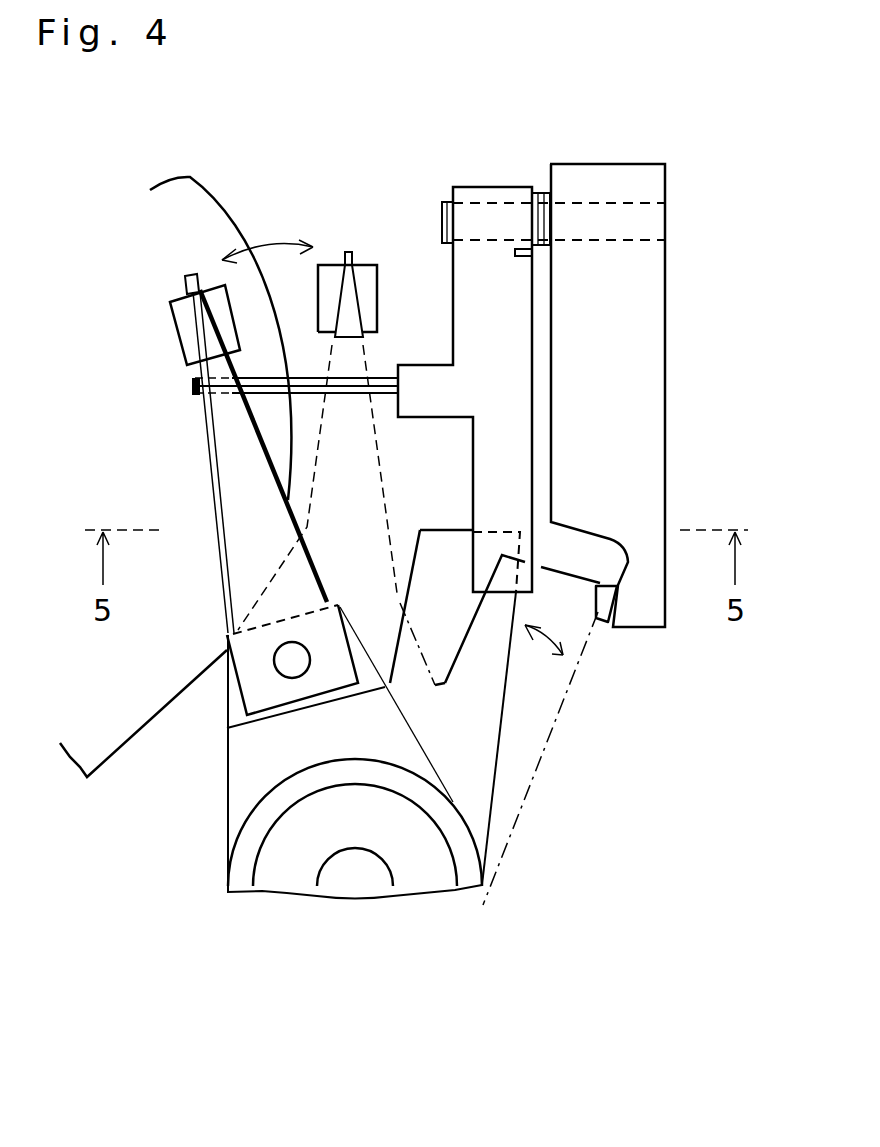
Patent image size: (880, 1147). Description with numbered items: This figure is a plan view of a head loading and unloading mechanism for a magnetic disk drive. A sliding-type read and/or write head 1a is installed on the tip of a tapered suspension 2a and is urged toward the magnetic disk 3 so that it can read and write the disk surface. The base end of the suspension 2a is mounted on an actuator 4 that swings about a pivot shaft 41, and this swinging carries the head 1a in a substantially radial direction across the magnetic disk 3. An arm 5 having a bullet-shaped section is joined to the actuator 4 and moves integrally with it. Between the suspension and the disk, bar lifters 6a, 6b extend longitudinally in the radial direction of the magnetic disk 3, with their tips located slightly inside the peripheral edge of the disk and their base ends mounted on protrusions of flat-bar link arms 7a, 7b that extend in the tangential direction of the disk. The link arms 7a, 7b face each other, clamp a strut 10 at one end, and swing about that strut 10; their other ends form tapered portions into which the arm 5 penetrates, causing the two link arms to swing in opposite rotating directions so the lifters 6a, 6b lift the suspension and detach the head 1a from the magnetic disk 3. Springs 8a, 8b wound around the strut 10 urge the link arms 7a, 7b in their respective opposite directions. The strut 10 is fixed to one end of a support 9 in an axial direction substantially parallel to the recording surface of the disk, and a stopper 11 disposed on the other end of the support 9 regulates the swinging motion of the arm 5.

The read and/or write head 1a is at (176, 326).
The tapered suspension 2a is at (207, 453).
The magnetic disk 3 is at (150, 737).
The actuator 4 is at (330, 795).
The pivot shaft 41 is at (355, 893).
The arm 5 is at (500, 742).
The bar lifter 6a is at (317, 393).
The bar lifter 6b is at (387, 377).
The link arm 7a is at (392, 193).
The link arm 7b is at (447, 222).
The spring 8a is at (583, 177).
The spring 8b is at (540, 192).
The support 9 is at (668, 362).
The strut 10 is at (452, 198).
The stopper 11 is at (607, 622).